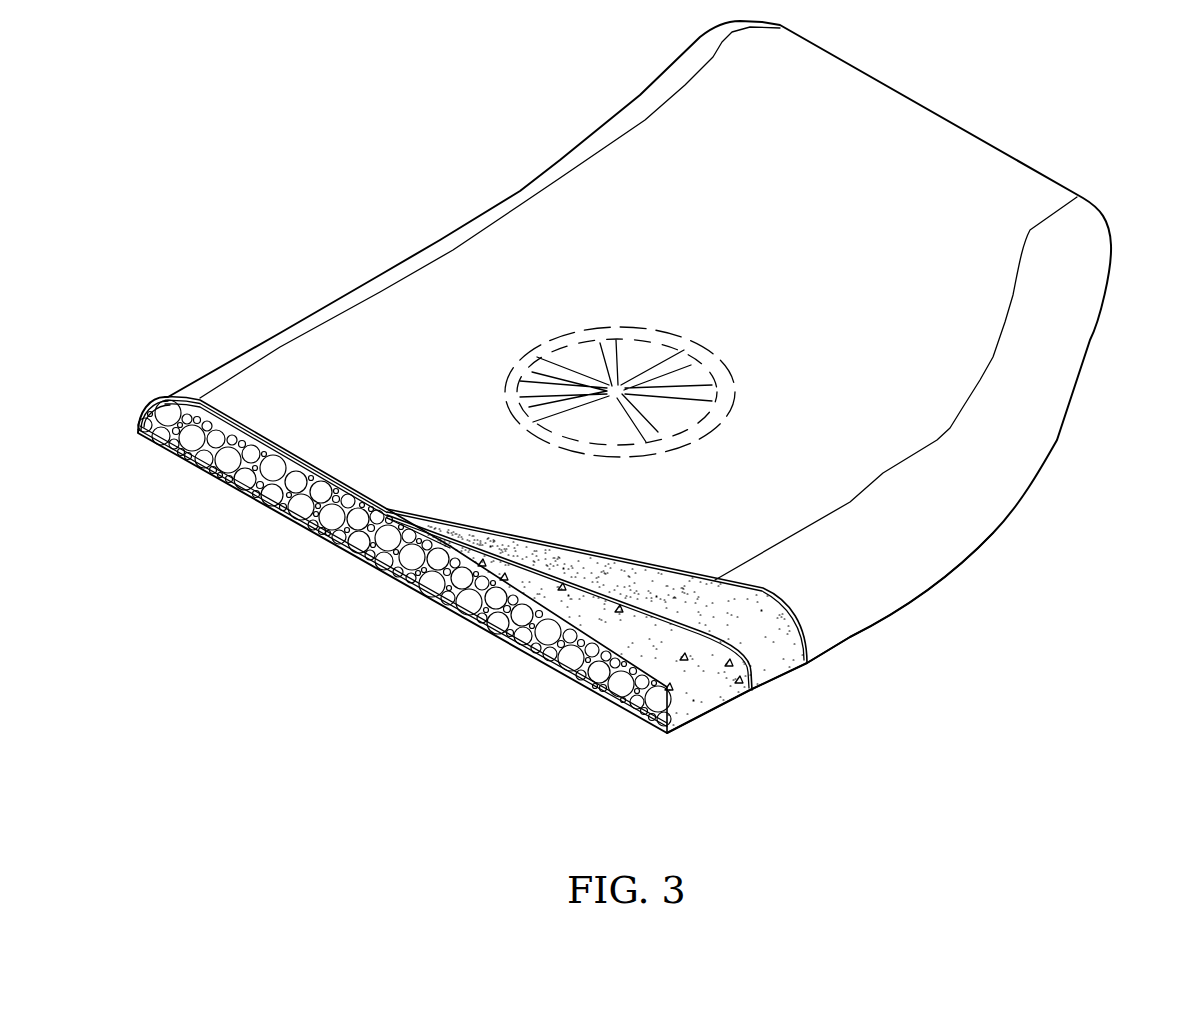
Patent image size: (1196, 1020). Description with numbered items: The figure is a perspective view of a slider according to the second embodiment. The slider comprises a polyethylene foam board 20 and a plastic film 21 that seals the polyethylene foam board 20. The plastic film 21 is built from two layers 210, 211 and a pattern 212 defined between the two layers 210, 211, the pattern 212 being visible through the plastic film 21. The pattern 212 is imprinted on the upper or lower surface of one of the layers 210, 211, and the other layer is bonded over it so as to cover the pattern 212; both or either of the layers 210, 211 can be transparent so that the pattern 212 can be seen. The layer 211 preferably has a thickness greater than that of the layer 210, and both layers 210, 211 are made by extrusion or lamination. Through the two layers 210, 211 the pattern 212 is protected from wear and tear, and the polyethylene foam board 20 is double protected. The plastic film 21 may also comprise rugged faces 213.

The polyethylene foam board 20 is at (700, 697).
The plastic film 21 is at (1032, 688).
The layer 210 is at (775, 667).
The layer 211 is at (853, 638).
The pattern 212 is at (637, 340).
The rugged faces 213 is at (923, 320).